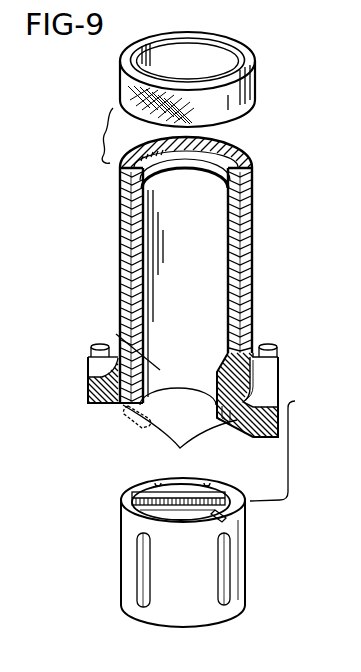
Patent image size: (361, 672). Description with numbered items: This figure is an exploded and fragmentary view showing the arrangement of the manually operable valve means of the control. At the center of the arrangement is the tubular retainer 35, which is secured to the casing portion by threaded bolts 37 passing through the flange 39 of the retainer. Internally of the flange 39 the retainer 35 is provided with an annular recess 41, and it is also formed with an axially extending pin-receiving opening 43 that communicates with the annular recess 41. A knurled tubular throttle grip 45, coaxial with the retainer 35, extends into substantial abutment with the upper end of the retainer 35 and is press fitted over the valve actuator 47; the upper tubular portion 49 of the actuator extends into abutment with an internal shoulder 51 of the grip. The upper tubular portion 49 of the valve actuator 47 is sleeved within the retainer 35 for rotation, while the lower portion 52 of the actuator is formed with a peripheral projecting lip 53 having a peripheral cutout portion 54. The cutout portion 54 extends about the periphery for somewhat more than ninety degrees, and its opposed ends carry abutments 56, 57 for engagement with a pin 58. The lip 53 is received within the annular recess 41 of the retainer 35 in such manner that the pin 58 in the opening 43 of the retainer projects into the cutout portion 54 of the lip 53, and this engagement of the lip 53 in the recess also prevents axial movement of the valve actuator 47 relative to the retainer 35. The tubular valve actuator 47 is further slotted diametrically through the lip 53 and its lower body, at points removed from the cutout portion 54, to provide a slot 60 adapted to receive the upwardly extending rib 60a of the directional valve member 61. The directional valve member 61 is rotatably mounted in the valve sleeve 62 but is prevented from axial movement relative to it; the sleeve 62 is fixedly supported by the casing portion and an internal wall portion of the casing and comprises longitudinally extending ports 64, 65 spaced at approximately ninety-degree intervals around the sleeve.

The retainer 35 is at (254, 312).
The threaded bolts 37 is at (276, 347).
The flange 39 is at (273, 385).
The annular recess 41 is at (125, 402).
The pin-receiving opening 43 is at (252, 428).
The knurled tubular throttle grip 45 is at (252, 178).
The valve actuator 47 is at (234, 214).
The upper tubular portion 49 is at (213, 170).
The internal shoulder 51 is at (122, 188).
The lower portion 52 is at (116, 334).
The peripheral projecting lip 53 is at (128, 406).
The peripheral cutout portion 54 is at (180, 440).
The abutment 56 is at (144, 428).
The abutment 57 is at (233, 420).
The pin 58 is at (290, 447).
The slot 60 is at (140, 400).
The rib 60a is at (135, 495).
The directional valve member 61 is at (160, 508).
The valve sleeve 62 is at (242, 563).
The port 64 is at (138, 602).
The port 65 is at (233, 605).